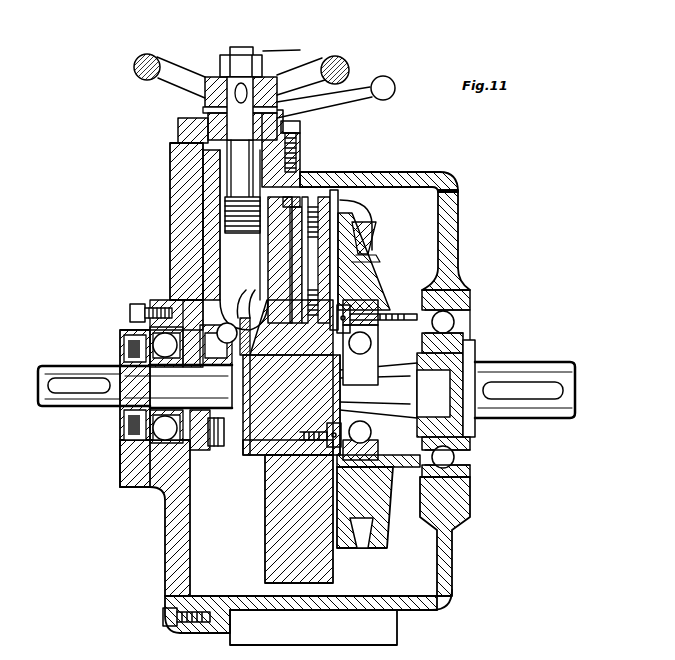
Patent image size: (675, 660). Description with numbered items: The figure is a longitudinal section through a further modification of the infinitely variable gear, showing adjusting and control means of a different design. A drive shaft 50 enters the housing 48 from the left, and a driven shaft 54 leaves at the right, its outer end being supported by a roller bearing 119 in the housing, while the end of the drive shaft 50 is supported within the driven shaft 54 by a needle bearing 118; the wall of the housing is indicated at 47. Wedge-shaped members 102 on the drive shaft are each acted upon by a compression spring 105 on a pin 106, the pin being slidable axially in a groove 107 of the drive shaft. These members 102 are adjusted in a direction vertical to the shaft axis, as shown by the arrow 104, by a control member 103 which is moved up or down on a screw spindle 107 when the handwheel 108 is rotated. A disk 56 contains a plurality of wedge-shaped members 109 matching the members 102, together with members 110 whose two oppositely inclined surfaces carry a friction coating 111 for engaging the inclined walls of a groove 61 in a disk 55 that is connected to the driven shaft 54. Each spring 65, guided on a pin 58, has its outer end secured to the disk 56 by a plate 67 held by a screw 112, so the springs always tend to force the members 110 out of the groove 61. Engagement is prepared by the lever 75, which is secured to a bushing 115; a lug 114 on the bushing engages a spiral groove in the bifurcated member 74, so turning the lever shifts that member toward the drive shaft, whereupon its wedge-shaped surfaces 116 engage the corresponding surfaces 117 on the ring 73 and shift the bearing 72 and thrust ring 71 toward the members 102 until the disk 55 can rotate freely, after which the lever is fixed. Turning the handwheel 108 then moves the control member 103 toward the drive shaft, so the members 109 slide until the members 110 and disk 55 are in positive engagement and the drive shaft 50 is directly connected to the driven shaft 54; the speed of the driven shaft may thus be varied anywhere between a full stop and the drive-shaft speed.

The handwheel 108 is at (348, 64).
The lever 75 is at (388, 98).
The bushing 115 is at (216, 128).
The plate 67 is at (318, 186).
The spring 65 is at (352, 186).
The lug 114 is at (200, 188).
The screw spindle 107 is at (225, 216).
The screw 112 is at (288, 207).
The wedge-shaped member 110 is at (368, 222).
The control member 103 is at (212, 237).
The friction coating 111 is at (374, 252).
The arrow 104 is at (259, 267).
The groove 61 is at (378, 258).
The bifurcated member 74 is at (192, 267).
The thrust ring 71 is at (238, 288).
The pin 58 is at (310, 272).
The ring 73 is at (212, 335).
The bearing 72 is at (193, 371).
The wedge-shaped member 102 is at (290, 312).
The needle bearing 118 is at (468, 350).
The driven shaft 54 is at (542, 372).
The wedge-shaped surface 116 is at (210, 391).
The compression spring 105 is at (254, 358).
The pin 106 is at (291, 405).
The wedge-shaped member 109 is at (390, 404).
The drive shaft 50 is at (93, 406).
The roller bearing 119 is at (462, 459).
The surface 117 is at (227, 447).
The disk 56 is at (276, 553).
The disk 55 is at (373, 518).
The housing 47 is at (172, 557).
The housing 48 is at (362, 608).